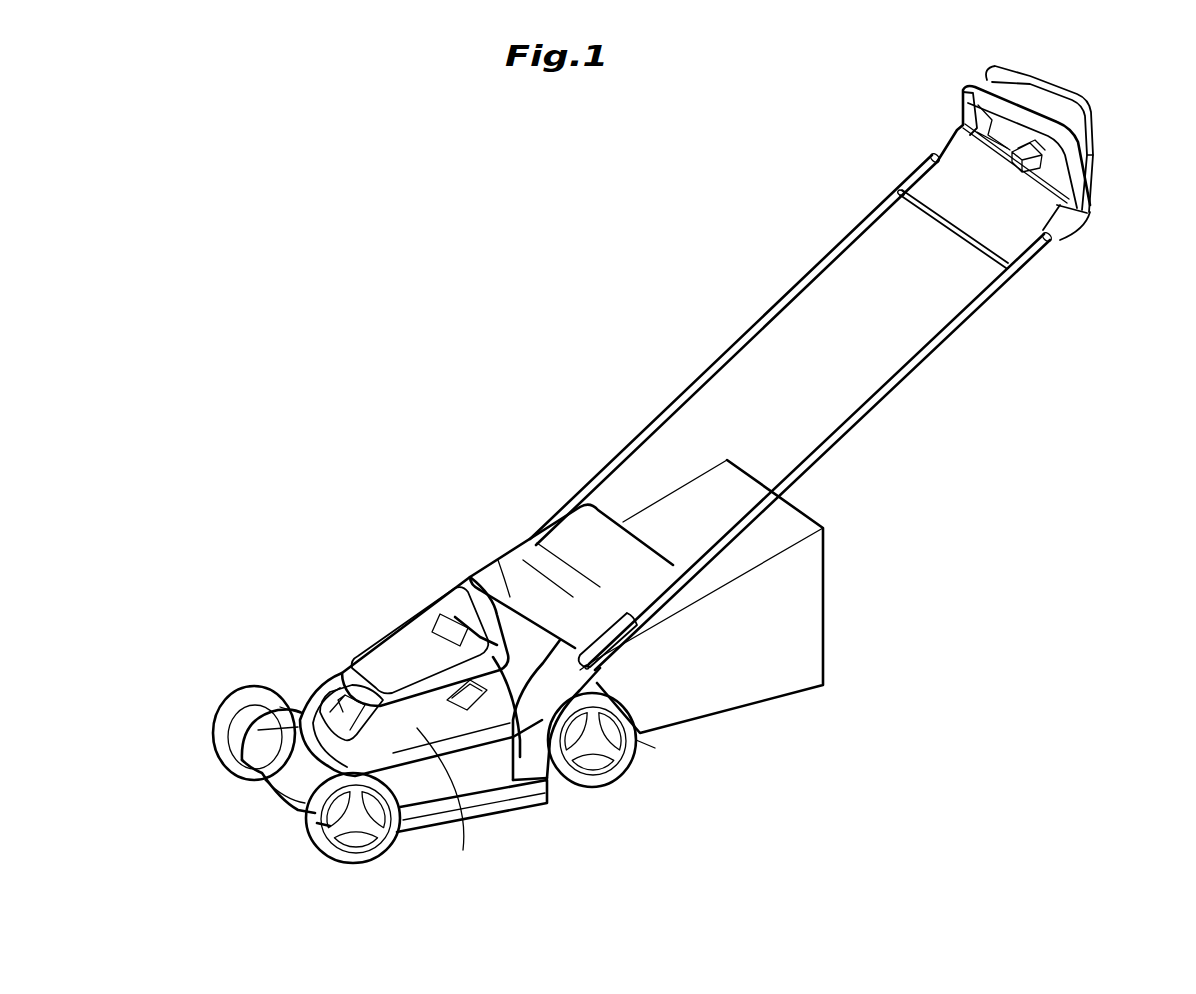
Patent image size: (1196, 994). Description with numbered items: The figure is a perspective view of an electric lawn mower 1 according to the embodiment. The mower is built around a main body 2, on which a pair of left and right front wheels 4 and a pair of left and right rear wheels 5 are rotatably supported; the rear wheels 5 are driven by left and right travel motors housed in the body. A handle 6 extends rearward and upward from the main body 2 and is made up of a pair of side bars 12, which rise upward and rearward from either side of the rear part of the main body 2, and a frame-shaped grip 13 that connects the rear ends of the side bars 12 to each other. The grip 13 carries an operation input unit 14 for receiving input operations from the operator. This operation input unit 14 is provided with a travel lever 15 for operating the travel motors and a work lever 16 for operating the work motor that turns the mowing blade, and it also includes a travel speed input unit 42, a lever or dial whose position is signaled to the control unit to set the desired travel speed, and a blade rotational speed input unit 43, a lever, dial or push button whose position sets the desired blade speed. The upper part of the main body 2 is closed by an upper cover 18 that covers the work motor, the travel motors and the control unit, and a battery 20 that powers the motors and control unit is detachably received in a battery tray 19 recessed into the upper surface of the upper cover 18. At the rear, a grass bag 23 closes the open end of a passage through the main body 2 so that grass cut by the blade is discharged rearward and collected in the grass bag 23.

The electric lawn mower 1 is at (470, 457).
The main body 2 is at (294, 774).
The front wheels 4 is at (240, 695).
The rear wheels 5 is at (605, 785).
The handle 6 is at (1030, 299).
The side bars 12 is at (738, 345).
The grip 13 is at (977, 83).
The operation input unit 14 is at (1027, 124).
The travel lever 15 is at (996, 67).
The work lever 16 is at (1086, 128).
The upper cover 18 is at (448, 806).
The battery tray 19 is at (340, 695).
The battery 20 is at (403, 648).
The grass bag 23 is at (806, 618).
The travel speed input unit 42 is at (1042, 164).
The blade rotational speed input unit 43 is at (1010, 160).